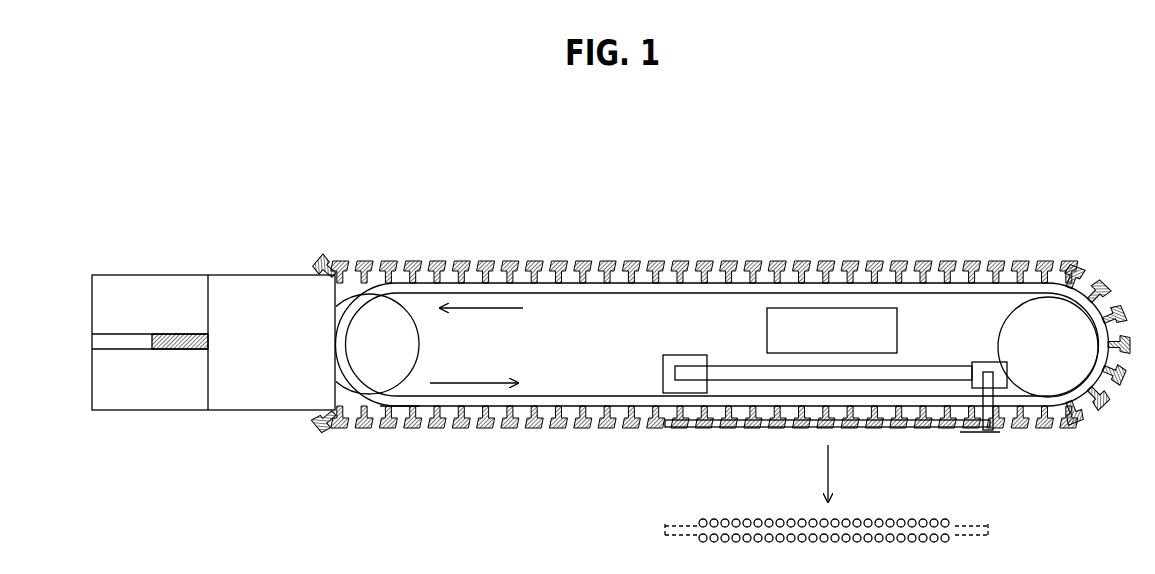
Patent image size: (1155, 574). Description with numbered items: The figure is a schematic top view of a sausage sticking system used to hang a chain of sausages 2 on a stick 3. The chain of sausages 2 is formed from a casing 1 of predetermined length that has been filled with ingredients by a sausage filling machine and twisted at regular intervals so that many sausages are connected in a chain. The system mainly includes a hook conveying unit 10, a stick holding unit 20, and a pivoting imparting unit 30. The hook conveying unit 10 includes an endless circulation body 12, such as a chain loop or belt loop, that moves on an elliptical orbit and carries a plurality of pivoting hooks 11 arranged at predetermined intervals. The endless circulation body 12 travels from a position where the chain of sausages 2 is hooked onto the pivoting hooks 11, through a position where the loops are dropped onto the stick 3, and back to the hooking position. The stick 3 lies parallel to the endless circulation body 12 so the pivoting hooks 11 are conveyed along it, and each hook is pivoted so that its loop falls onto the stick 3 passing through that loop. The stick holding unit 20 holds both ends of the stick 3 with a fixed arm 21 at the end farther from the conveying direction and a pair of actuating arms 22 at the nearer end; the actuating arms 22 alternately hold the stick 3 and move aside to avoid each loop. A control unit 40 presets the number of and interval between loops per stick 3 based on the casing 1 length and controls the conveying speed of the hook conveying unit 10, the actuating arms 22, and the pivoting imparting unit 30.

The casing 1 is at (160, 333).
The chain of sausages 2 is at (396, 431).
The stick 3 is at (938, 433).
The hook conveying unit 10 is at (716, 192).
The pivoting hooks 11 is at (682, 262).
The endless circulation body 12 is at (742, 283).
The stick holding unit 20 is at (999, 442).
The fixed arm 21 is at (986, 433).
The pair of actuating arms 22 is at (662, 373).
The pivoting imparting unit 30 is at (972, 372).
The control unit 40 is at (766, 336).